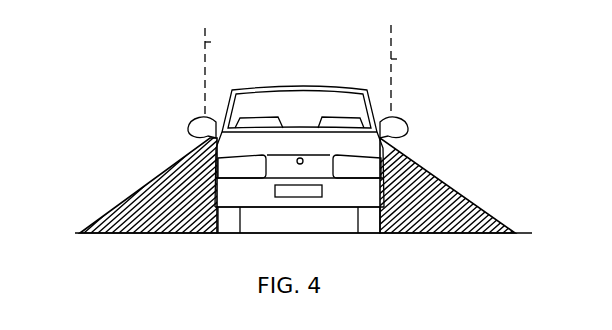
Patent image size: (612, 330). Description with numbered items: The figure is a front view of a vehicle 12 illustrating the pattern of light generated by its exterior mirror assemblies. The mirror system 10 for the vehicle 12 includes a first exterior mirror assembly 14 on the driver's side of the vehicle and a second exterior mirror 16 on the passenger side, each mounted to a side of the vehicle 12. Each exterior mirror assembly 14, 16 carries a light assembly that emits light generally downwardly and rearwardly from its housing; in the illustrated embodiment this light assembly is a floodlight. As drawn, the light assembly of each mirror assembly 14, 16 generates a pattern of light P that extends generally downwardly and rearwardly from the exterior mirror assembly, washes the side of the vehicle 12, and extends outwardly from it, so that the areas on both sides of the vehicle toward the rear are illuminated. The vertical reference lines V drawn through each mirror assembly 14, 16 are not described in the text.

The mirror system 10 is at (299, 138).
The vehicle 12 is at (305, 87).
The first exterior mirror assembly 14 is at (398, 120).
The second exterior mirror 16 is at (198, 120).
The pattern of light P is at (130, 195).
The vertical reference line V is at (211, 42).